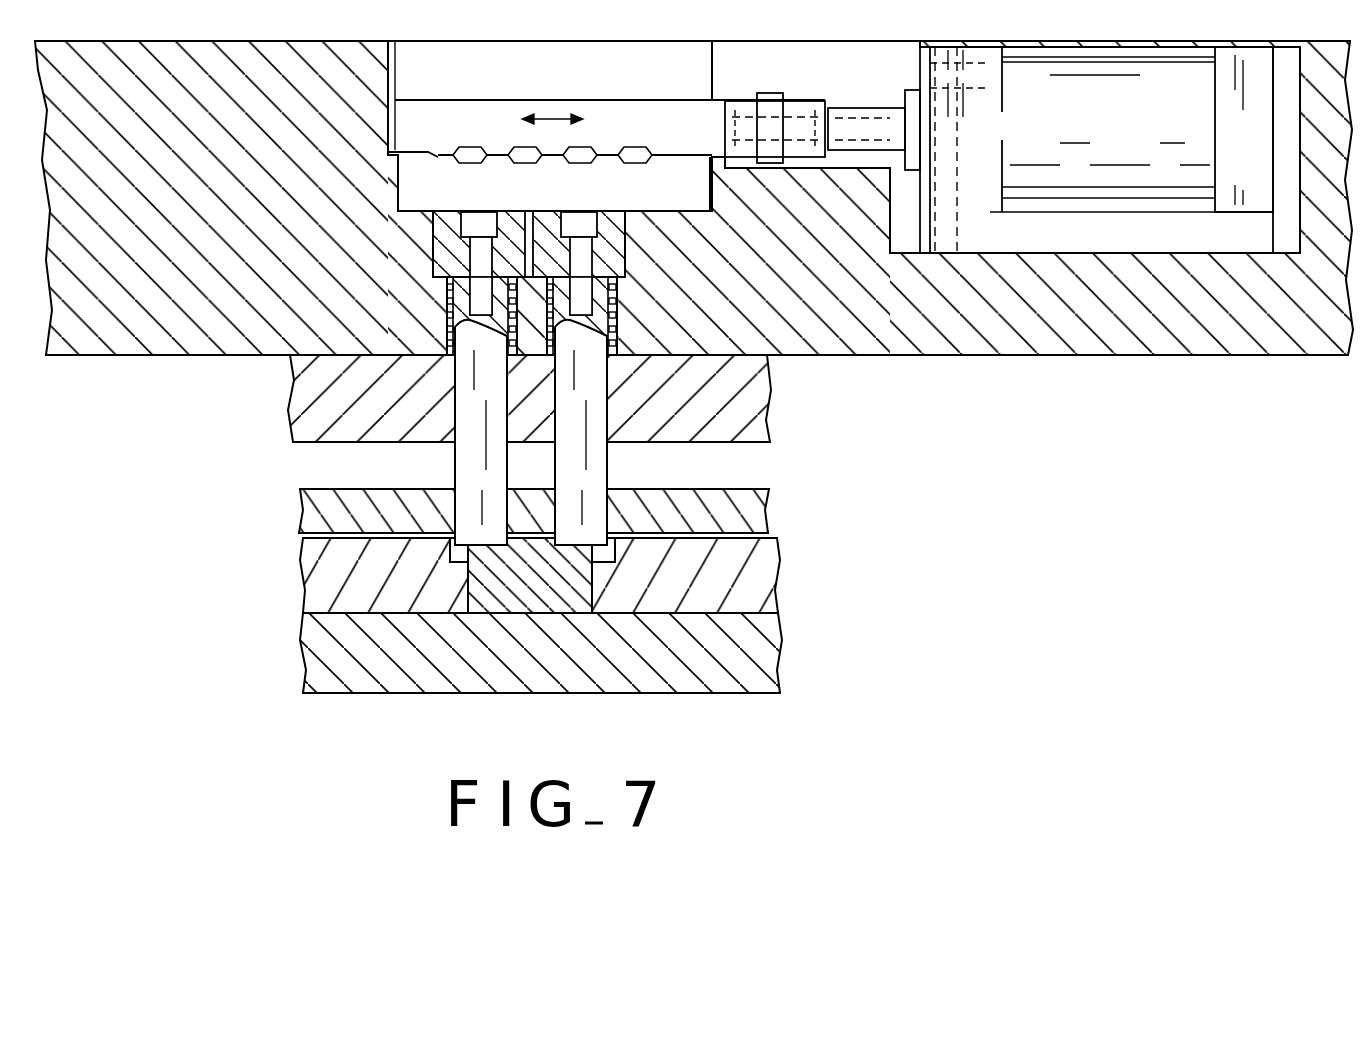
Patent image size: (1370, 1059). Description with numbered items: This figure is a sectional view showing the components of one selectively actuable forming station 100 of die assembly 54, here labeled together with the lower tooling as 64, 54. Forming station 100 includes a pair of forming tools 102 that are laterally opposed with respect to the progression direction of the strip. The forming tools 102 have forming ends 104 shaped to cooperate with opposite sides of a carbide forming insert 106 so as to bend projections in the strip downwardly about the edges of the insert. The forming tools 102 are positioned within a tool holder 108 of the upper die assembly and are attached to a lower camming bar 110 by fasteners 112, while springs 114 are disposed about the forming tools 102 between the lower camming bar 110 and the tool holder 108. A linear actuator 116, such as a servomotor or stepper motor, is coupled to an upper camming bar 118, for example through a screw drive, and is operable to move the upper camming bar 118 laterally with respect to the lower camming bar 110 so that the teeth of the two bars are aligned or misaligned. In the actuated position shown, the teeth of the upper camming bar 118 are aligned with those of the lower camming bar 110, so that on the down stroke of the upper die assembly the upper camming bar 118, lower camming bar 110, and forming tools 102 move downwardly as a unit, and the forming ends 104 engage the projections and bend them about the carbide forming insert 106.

The selectively actuable forming station 100 is at (1004, 489).
The forming tools 102 is at (477, 458).
The forming ends 104 is at (465, 516).
The carbide forming insert 106 is at (498, 581).
The tool holder 108 is at (748, 392).
The lower camming bar 110 is at (560, 197).
The fasteners 112 is at (475, 250).
The springs 114 is at (453, 317).
The linear actuator 116 is at (1125, 134).
The upper camming bar 118 is at (675, 139).
The tooling plate 64 is at (623, 615).
The die assembly 54 is at (740, 577).